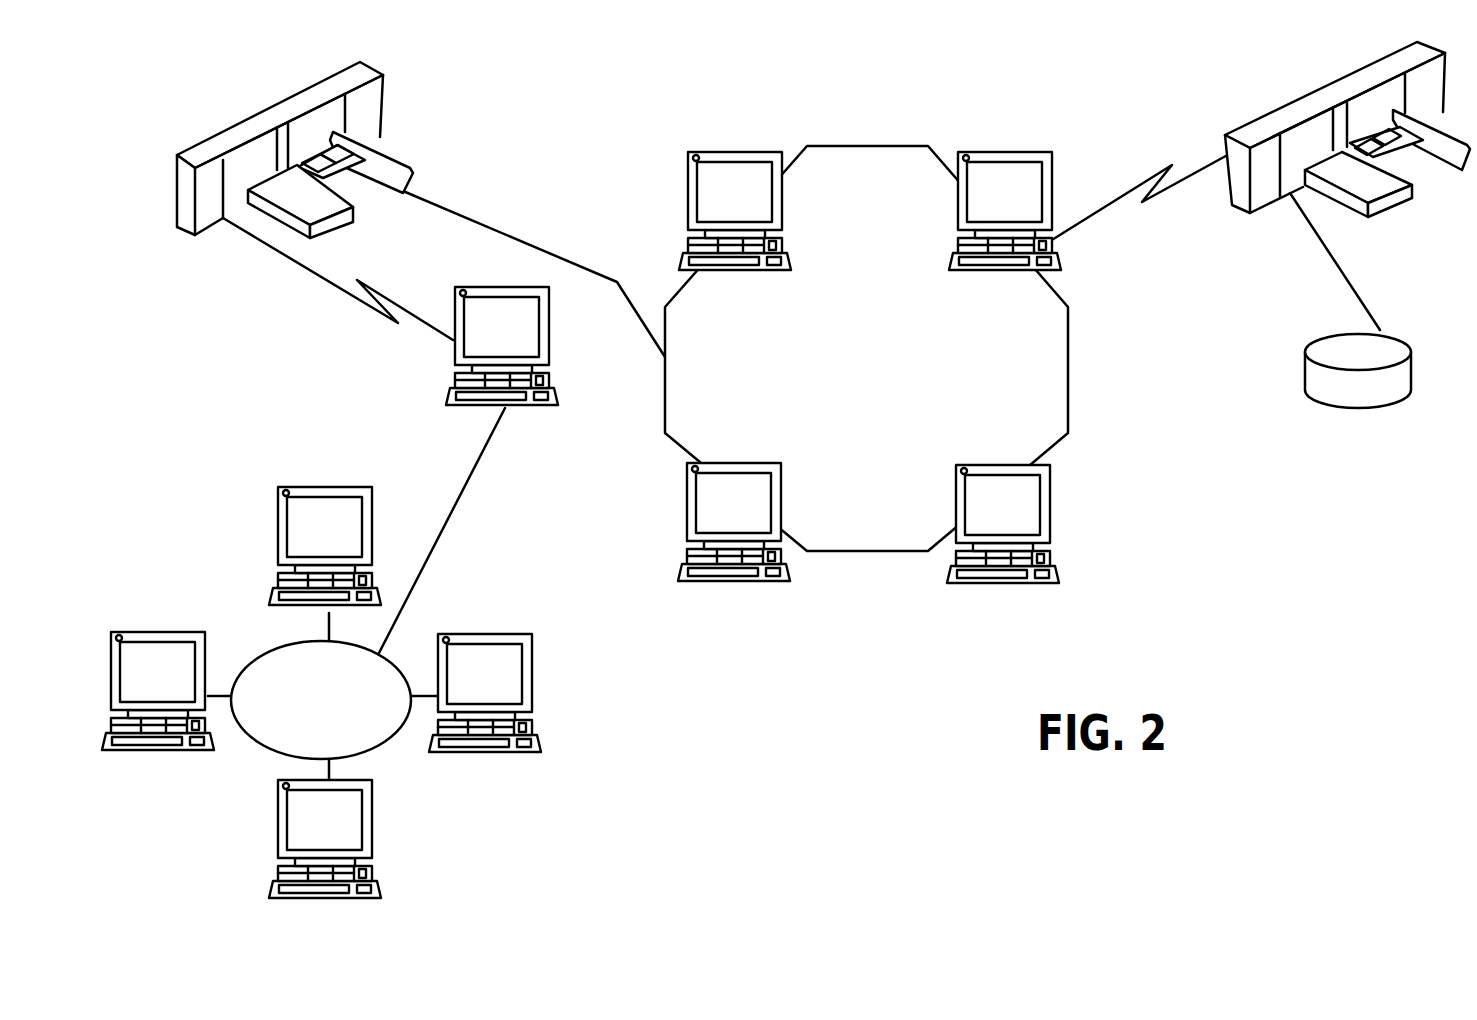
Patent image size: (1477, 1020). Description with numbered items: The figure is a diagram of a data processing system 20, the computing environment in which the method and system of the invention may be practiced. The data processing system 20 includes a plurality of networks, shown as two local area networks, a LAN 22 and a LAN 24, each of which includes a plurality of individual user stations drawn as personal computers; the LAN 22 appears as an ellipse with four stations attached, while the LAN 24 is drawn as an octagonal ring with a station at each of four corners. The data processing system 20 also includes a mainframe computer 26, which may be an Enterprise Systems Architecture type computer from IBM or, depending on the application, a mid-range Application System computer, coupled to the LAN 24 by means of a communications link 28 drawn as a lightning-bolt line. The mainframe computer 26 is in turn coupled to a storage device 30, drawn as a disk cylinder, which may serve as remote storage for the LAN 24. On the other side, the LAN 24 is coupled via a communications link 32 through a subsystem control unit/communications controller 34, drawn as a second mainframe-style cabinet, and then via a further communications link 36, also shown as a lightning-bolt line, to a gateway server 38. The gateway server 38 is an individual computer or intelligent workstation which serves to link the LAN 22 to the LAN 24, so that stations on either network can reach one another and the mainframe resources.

The data processing system 20 is at (875, 124).
The LAN 22 is at (452, 839).
The LAN 24 is at (836, 433).
The mainframe computer 26 is at (1290, 107).
The communications link 28 is at (1140, 185).
The storage device 30 is at (1305, 395).
The communications link 32 is at (547, 258).
The subsystem control unit/communications controller 34 is at (245, 120).
The communications link 36 is at (340, 290).
The gateway server 38 is at (495, 286).